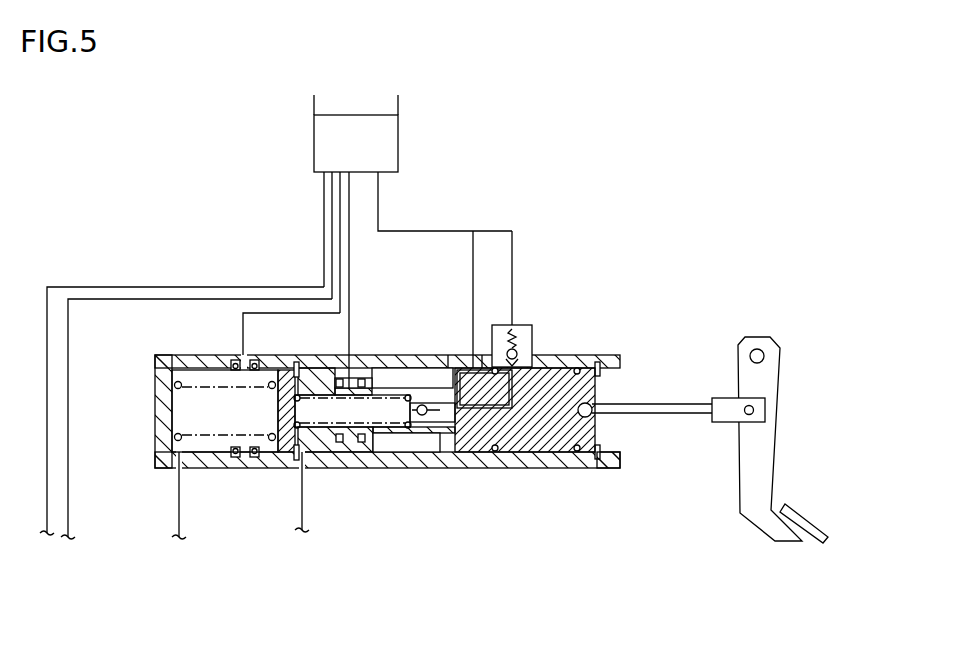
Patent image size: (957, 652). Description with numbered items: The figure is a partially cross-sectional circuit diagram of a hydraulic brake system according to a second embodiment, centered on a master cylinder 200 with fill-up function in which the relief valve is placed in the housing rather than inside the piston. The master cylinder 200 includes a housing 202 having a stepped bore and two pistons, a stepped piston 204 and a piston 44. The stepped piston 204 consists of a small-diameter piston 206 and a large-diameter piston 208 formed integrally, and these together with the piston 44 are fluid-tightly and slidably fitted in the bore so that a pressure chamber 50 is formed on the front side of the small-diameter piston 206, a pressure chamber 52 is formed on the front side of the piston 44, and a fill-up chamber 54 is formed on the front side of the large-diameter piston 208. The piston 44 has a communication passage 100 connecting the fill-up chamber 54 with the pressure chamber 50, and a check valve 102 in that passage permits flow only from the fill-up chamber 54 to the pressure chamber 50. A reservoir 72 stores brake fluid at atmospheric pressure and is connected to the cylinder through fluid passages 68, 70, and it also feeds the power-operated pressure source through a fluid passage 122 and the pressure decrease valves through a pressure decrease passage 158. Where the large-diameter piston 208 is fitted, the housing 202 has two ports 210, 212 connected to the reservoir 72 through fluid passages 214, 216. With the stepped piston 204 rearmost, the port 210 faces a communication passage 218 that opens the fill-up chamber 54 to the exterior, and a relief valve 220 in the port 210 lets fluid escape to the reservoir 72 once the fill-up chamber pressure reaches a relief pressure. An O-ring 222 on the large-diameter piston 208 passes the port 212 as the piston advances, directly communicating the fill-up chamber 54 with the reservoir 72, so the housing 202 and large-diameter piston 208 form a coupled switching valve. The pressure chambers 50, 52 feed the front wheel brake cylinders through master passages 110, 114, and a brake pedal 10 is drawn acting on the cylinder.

The master cylinder 200 is at (613, 208).
The piston 44 is at (228, 376).
The pressure chamber 52 is at (178, 451).
The stepped piston 204 is at (418, 446).
The communication passage 100 is at (418, 370).
The fill-up chamber 54 is at (398, 372).
The check valve 102 is at (370, 378).
The pressure chamber 50 is at (320, 437).
The small-diameter piston 206 is at (443, 455).
The communication passage 218 is at (520, 390).
The large-diameter piston 208 is at (598, 428).
The housing 202 is at (598, 464).
The brake pedal 10 is at (772, 372).
The reservoir 72 is at (398, 146).
The fluid passage 68 is at (350, 207).
The fluid passage 214 is at (493, 231).
The fluid passage 216 is at (472, 314).
The port 212 is at (448, 355).
The O-ring 222 is at (482, 355).
The relief valve 220 is at (583, 324).
The port 210 is at (520, 325).
The fluid passage 70 is at (243, 318).
The pressure decrease passage 158 is at (47, 511).
The fluid passage 122 is at (68, 499).
The master passage 114 is at (179, 515).
The master passage 110 is at (300, 497).